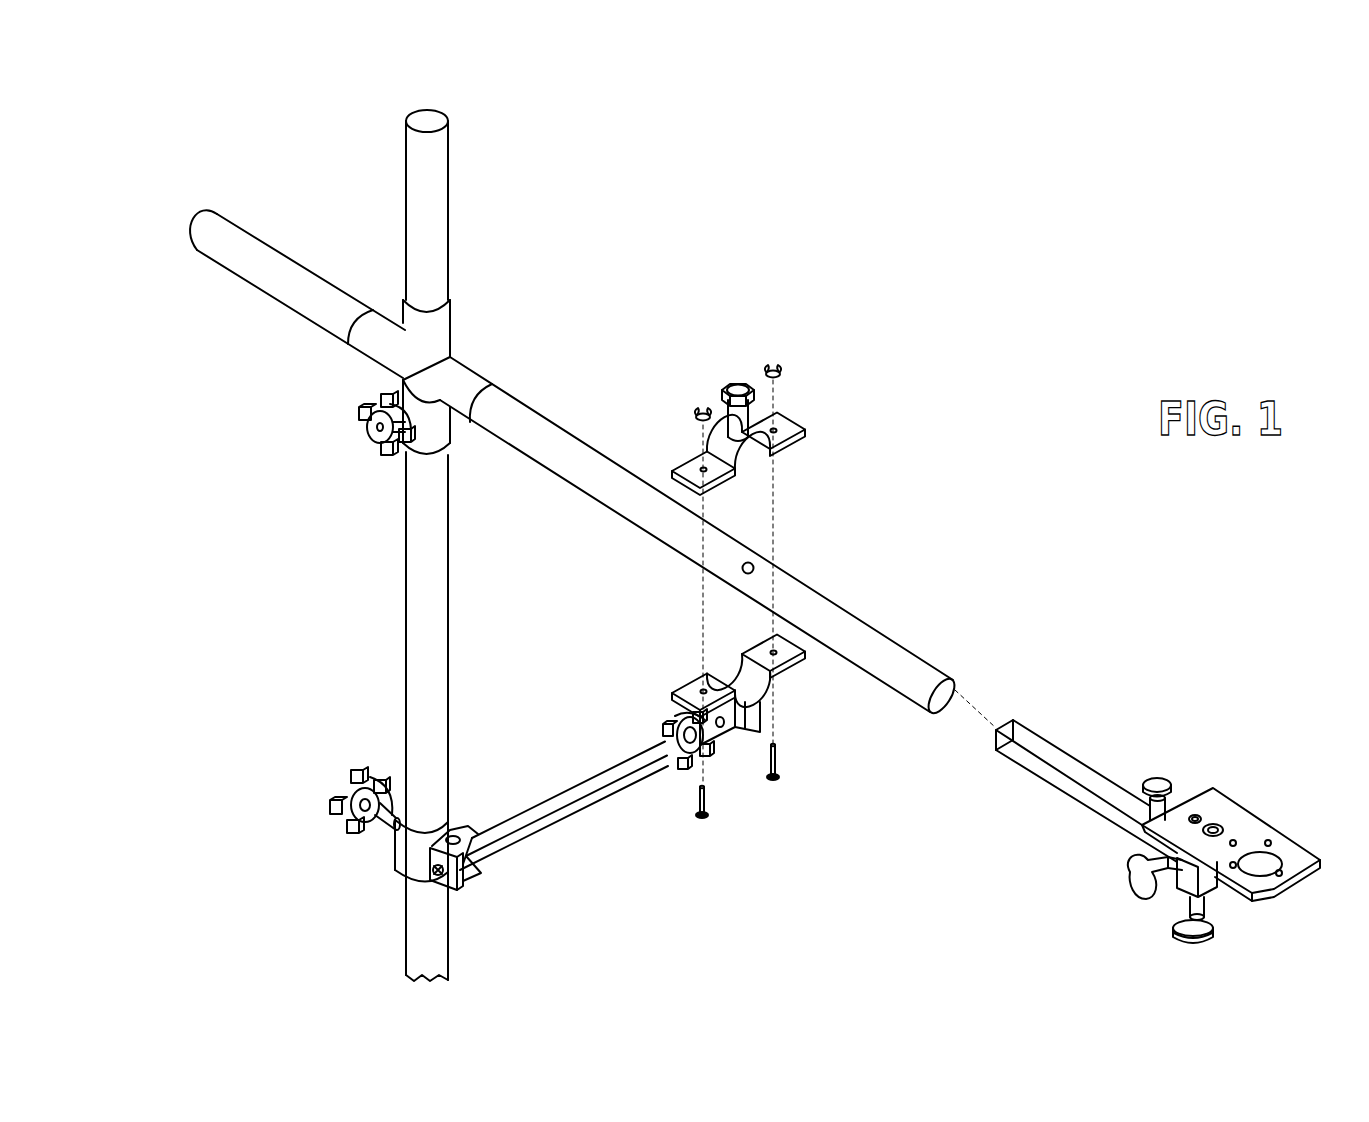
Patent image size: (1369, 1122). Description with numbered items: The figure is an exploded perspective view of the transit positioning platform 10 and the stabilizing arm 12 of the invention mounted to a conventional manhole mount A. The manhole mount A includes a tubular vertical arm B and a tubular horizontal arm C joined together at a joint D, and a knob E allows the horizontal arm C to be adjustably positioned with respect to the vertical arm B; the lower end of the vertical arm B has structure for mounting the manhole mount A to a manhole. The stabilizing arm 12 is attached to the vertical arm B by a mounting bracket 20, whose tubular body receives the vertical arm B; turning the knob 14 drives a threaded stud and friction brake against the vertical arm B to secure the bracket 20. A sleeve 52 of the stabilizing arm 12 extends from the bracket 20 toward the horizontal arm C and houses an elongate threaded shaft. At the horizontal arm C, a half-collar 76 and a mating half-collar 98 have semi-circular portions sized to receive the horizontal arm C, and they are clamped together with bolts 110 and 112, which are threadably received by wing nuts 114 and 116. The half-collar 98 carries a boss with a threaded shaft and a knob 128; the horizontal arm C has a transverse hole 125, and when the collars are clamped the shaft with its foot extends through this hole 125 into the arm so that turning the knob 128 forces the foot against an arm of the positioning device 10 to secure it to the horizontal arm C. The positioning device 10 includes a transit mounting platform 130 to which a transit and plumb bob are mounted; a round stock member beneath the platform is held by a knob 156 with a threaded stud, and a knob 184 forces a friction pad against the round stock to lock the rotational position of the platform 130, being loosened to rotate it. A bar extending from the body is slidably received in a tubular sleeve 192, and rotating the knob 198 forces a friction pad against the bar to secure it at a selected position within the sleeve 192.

The transit positioning platform 10 is at (1105, 912).
The stabilizing arm 12 is at (603, 822).
The knob 14 is at (328, 812).
The mounting bracket 20 is at (388, 853).
The sleeve 52 is at (527, 830).
The half-collar 76 is at (787, 675).
The mating half-collar 98 is at (778, 432).
The bolt 110 is at (702, 798).
The bolt 112 is at (780, 763).
The wing nut 114 is at (703, 413).
The wing nut 116 is at (777, 370).
The transverse hole 125 is at (757, 570).
The knob 128 is at (723, 385).
The transit mounting platform 130 is at (1247, 822).
The knob 156 is at (1212, 933).
The knob 184 is at (1137, 870).
The tubular sleeve 192 is at (1048, 775).
The knob 198 is at (1157, 785).
The manhole mount A is at (368, 622).
The tubular vertical arm B is at (437, 690).
The tubular horizontal arm C is at (560, 435).
The joint D is at (465, 367).
The knob E is at (377, 433).